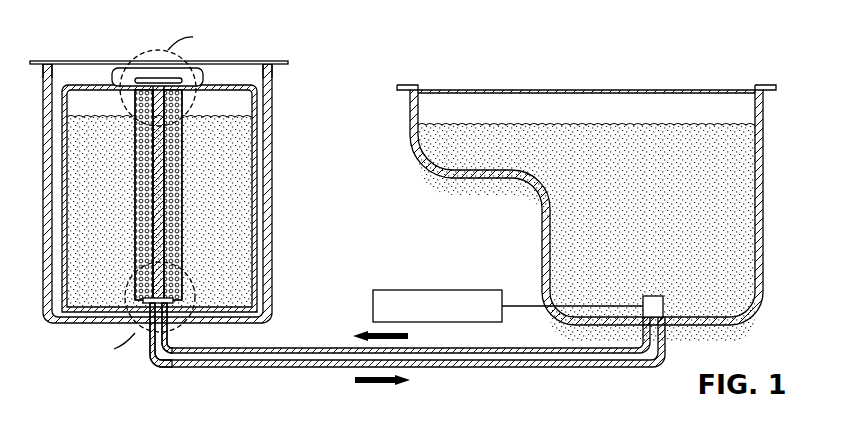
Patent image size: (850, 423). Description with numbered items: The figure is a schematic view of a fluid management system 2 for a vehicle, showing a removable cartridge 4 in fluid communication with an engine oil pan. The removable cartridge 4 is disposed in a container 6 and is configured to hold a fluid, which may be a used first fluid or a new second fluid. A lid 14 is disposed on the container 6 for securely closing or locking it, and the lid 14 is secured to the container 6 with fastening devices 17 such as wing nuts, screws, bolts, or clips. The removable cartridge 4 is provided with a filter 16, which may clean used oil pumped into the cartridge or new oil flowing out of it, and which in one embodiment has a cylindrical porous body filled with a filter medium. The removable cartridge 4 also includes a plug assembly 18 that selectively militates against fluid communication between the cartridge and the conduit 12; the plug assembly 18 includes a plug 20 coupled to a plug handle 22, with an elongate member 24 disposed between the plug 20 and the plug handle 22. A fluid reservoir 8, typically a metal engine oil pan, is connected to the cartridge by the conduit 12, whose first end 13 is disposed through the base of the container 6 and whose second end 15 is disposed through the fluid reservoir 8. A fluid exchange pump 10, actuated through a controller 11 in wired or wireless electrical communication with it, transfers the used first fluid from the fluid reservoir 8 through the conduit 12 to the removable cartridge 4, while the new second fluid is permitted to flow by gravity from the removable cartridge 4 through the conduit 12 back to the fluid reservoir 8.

The fluid management system 2 is at (318, 47).
The removable cartridge 4 is at (256, 185).
The container 6 is at (272, 131).
The fluid reservoir 8 is at (764, 171).
The fluid exchange pump 10 is at (652, 296).
The controller 11 is at (462, 290).
The conduit 12 is at (313, 347).
The first end 13 is at (144, 336).
The lid 14 is at (79, 61).
The second end 15 is at (666, 339).
The filter 16 is at (132, 230).
The fastening devices 17 is at (43, 61).
The plug assembly 18 is at (184, 210).
The plug 20 is at (147, 294).
The plug handle 22 is at (145, 79).
The elongate member 24 is at (158, 247).